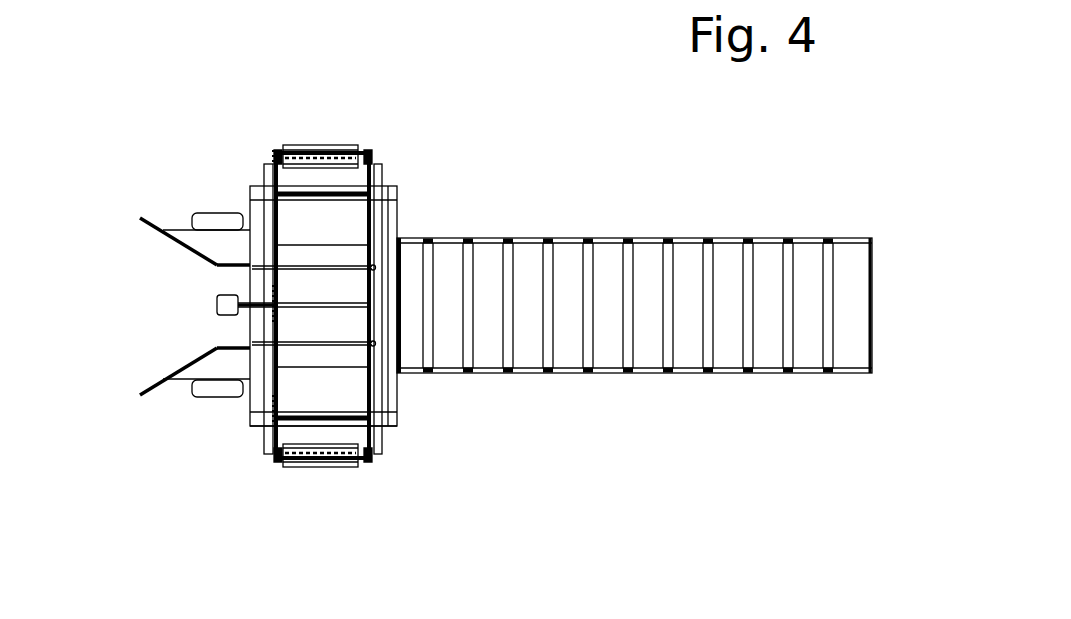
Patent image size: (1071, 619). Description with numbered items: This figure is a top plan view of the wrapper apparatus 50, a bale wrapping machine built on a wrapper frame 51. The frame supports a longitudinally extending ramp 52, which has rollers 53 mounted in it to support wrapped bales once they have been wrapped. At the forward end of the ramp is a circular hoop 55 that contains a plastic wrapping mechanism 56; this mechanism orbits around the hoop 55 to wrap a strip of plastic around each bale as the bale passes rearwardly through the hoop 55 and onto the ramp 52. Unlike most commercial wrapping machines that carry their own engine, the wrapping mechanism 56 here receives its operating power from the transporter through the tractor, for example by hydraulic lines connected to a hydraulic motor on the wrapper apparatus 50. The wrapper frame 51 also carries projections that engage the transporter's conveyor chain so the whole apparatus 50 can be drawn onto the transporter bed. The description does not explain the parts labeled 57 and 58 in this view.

The wrapper apparatus 50 is at (443, 178).
The wrapper frame 51 is at (243, 405).
The ramp 52 is at (600, 373).
The rollers 53 is at (745, 295).
The circular hoop 55 is at (385, 433).
The plastic wrapping mechanism 56 is at (318, 145).
The arms 57 is at (195, 256).
The adjustment shaft 58 is at (273, 300).